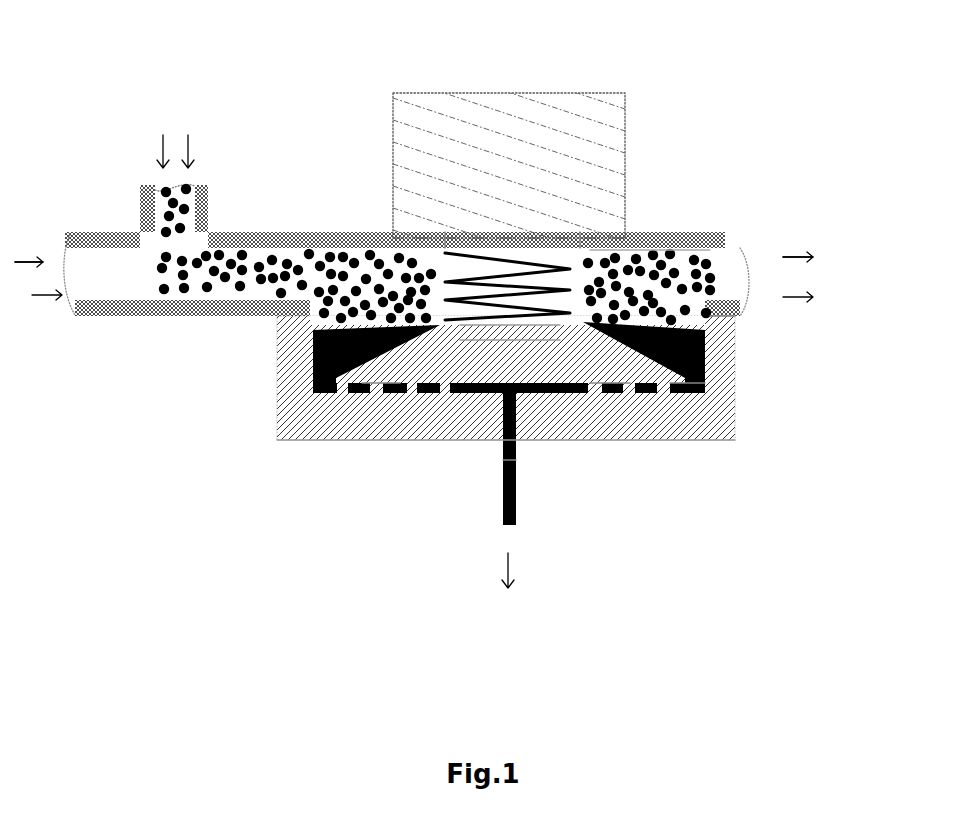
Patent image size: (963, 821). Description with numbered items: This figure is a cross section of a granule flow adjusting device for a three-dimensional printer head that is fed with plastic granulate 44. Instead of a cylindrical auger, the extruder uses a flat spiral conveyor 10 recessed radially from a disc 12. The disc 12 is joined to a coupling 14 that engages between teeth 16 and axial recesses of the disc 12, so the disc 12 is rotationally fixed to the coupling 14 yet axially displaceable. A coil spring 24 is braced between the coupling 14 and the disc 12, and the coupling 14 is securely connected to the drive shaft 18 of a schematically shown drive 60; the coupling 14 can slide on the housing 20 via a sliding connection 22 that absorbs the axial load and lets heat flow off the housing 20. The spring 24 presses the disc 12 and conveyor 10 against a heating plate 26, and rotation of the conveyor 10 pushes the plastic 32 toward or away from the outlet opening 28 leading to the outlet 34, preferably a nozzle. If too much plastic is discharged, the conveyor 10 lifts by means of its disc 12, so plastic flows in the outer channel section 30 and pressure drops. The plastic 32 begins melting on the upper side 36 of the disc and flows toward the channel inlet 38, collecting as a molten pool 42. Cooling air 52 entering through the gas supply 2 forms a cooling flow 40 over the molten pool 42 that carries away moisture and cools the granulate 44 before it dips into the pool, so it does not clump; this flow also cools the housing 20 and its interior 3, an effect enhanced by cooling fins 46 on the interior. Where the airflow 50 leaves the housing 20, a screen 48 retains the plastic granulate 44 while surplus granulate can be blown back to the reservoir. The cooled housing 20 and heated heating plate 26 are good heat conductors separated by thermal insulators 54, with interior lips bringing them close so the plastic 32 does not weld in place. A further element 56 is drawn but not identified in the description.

The gas supply 2 is at (112, 306).
The interior 3 is at (703, 393).
The spiral conveyor 10 is at (340, 395).
The disc 12 is at (540, 390).
The coupling 14 is at (547, 240).
The teeth 16 is at (560, 337).
The drive shaft 18 is at (504, 243).
The housing 20 is at (332, 237).
The sliding connection 22 is at (527, 240).
The coil spring 24 is at (450, 235).
The heating plate 26 is at (303, 417).
The outlet opening 28 is at (500, 460).
The channel section 30 is at (590, 390).
The plastic 32 is at (312, 367).
The outlet 34 is at (520, 457).
The upper side of disc 36 is at (380, 385).
The channel inlet 38 is at (683, 393).
The cooling flow 40 is at (147, 302).
The molten pool 42 is at (312, 345).
The plastic granulate 44 is at (270, 245).
The cooling fins 46 is at (620, 293).
The screen 48 is at (717, 275).
The airflow outlet 50 is at (730, 285).
The cooling air 52 is at (78, 267).
The thermal insulator 54 is at (735, 350).
The outlet section 56 is at (713, 328).
The drive 60 is at (577, 128).